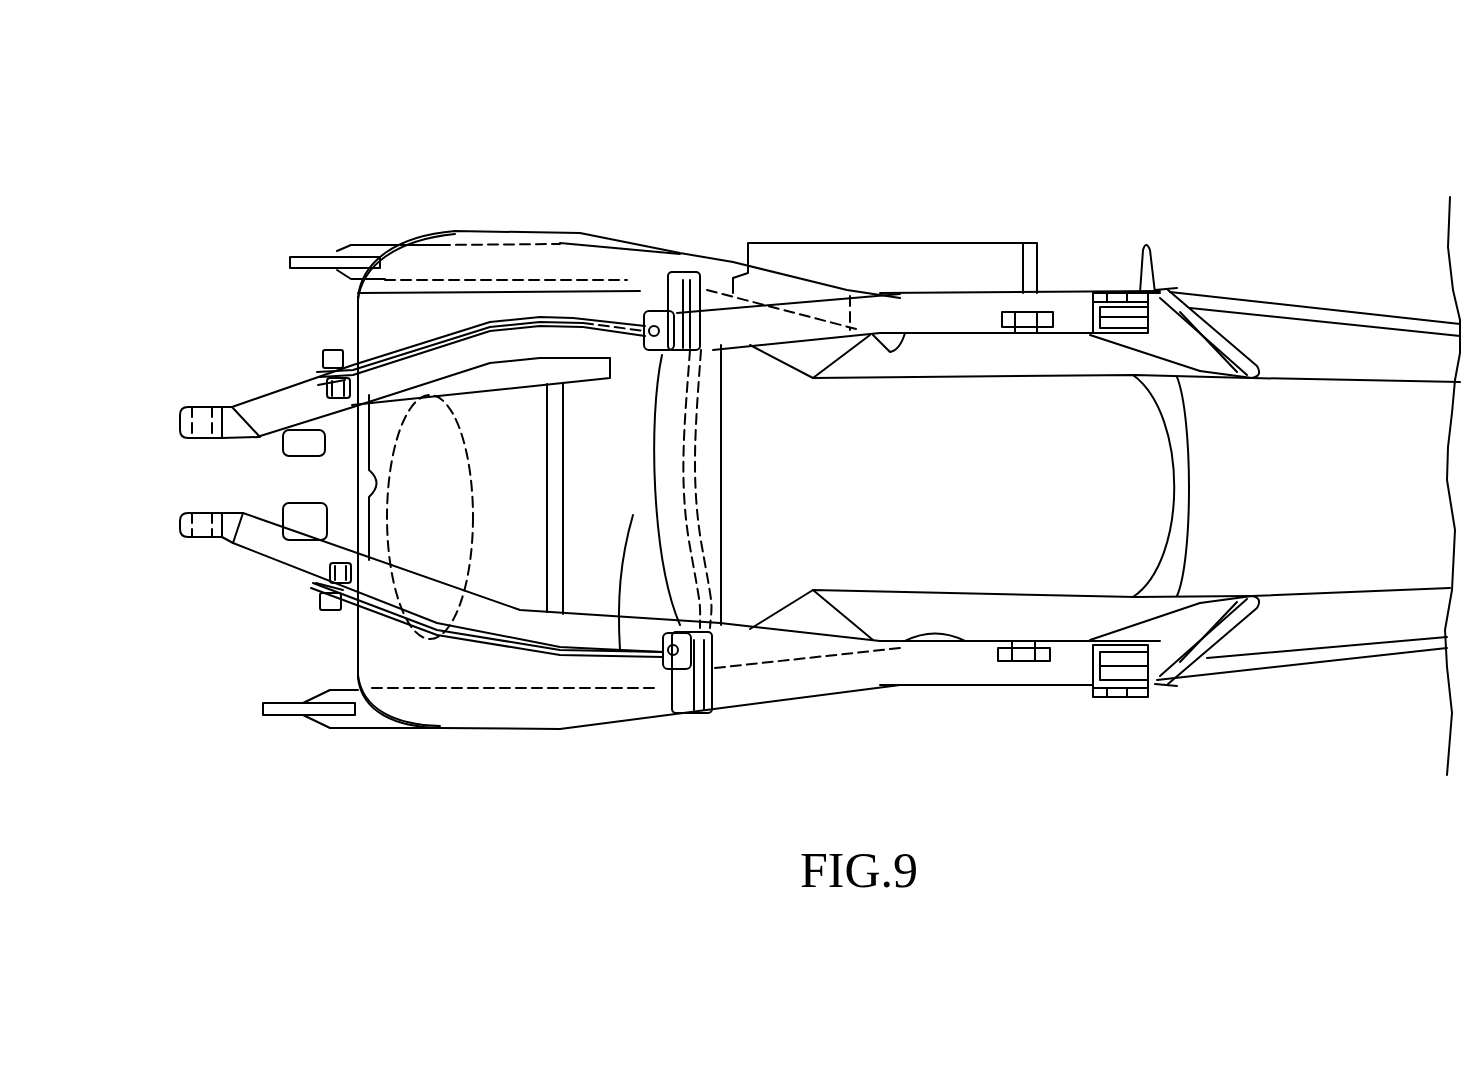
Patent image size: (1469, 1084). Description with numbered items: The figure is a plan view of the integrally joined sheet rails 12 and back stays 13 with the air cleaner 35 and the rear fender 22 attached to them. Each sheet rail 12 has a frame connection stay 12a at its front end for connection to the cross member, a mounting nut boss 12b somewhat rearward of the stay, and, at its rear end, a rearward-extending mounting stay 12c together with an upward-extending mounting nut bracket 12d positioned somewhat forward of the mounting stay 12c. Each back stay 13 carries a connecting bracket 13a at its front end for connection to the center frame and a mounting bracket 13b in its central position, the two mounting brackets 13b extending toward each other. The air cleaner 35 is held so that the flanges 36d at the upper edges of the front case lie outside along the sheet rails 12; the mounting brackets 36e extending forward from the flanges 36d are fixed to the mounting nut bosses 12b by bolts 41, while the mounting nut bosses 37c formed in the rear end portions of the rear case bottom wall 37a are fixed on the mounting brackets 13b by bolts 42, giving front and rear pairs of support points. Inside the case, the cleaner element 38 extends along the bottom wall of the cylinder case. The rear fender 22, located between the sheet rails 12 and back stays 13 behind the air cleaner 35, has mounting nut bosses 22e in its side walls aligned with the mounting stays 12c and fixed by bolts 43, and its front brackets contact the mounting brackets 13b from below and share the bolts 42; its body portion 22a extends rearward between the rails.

The sheet rail 12 is at (968, 293).
The frame connection stay 12a is at (183, 408).
The mounting nut boss 12b is at (323, 387).
The mounting stay 12c is at (1107, 293).
The mounting nut bracket 12d is at (1045, 312).
The back stay 13 is at (631, 238).
The connecting bracket 13a is at (297, 257).
The mounting bracket 13b is at (694, 290).
The rear fender 22 is at (1267, 282).
The body frame portion 22a is at (762, 447).
The mounting nut boss 22e is at (1158, 326).
The air cleaner 35 is at (331, 479).
The flange 36d is at (490, 322).
The mounting bracket 36e is at (317, 369).
The bottom wall 37a is at (620, 650).
The mounting nut boss 37c is at (657, 310).
The cleaner element 38 is at (565, 470).
The bolt 41 is at (333, 350).
The bolt 42 is at (707, 300).
The bolt 43 is at (1121, 292).